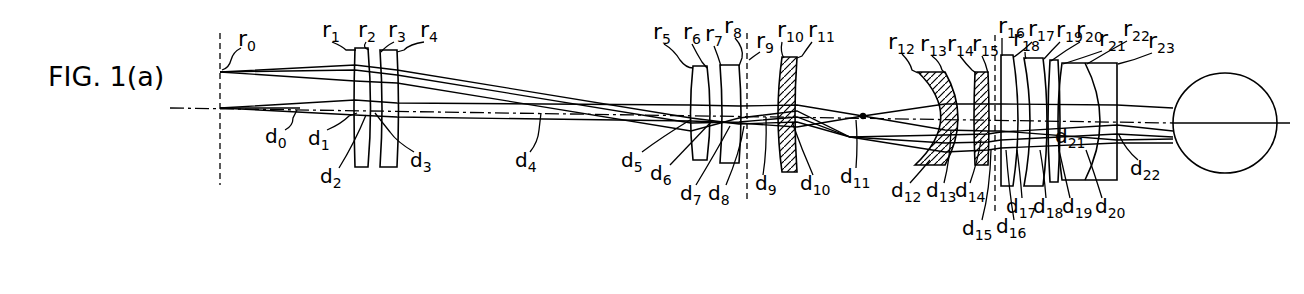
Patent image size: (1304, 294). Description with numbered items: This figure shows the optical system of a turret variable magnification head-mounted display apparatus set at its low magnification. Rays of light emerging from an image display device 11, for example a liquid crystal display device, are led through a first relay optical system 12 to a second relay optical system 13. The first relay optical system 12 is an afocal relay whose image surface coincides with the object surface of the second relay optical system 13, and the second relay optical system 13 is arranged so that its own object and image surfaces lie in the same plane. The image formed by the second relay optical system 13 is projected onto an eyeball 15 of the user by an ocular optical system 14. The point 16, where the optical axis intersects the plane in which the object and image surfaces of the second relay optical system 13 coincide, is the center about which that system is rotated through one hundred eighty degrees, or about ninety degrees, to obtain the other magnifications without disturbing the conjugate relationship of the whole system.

The image display device 11 is at (219, 184).
The first relay optical system 12 is at (733, 193).
The second relay optical system 13 is at (978, 193).
The ocular optical system 14 is at (1128, 233).
The eyeball 15 is at (1200, 172).
The point 16 is at (864, 114).